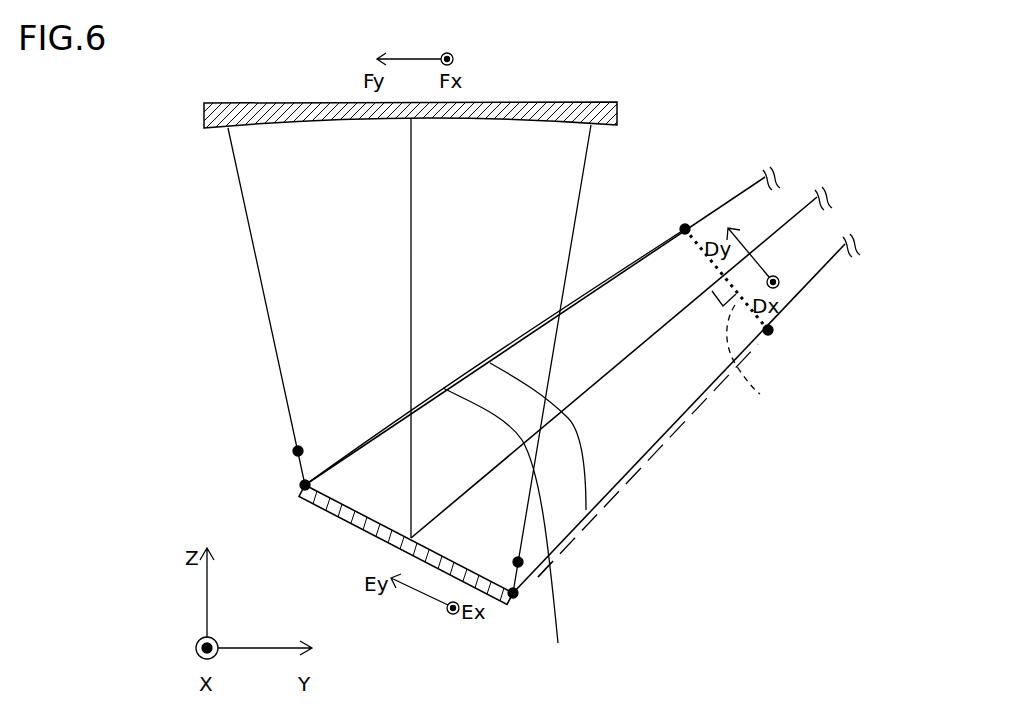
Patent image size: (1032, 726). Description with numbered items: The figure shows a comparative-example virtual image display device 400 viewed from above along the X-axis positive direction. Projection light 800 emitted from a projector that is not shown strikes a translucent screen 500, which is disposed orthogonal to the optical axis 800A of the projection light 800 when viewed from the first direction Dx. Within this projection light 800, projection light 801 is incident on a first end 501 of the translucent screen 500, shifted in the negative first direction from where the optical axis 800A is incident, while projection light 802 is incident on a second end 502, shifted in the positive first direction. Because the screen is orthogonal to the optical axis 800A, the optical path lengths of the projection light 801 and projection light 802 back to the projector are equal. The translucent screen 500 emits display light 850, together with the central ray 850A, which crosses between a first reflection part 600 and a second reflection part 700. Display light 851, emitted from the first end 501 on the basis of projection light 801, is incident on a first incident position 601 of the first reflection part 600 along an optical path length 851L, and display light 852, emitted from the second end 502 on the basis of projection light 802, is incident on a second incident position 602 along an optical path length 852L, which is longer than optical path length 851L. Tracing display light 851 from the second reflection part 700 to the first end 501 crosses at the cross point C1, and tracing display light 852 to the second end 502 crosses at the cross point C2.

The virtual image display device 400 is at (781, 136).
The translucent screen 500 is at (754, 367).
The first end 501 is at (773, 339).
The second end 502 is at (671, 234).
The first reflection part 600 is at (396, 549).
The first incident position 601 is at (527, 594).
The second incident position 602 is at (302, 499).
The second reflection part 700 is at (617, 103).
The projection light 800 is at (609, 369).
The projection light 801 is at (828, 266).
The projection light 802 is at (727, 202).
The optical axis 800A is at (779, 234).
The display light 850 is at (642, 503).
The central ray path 850A is at (681, 418).
The display light 851 is at (642, 461).
The optical path length 851L is at (642, 477).
The display light 852 is at (586, 510).
The optical path length 852L is at (540, 580).
The cross point C1 is at (547, 614).
The cross point C2 is at (298, 451).